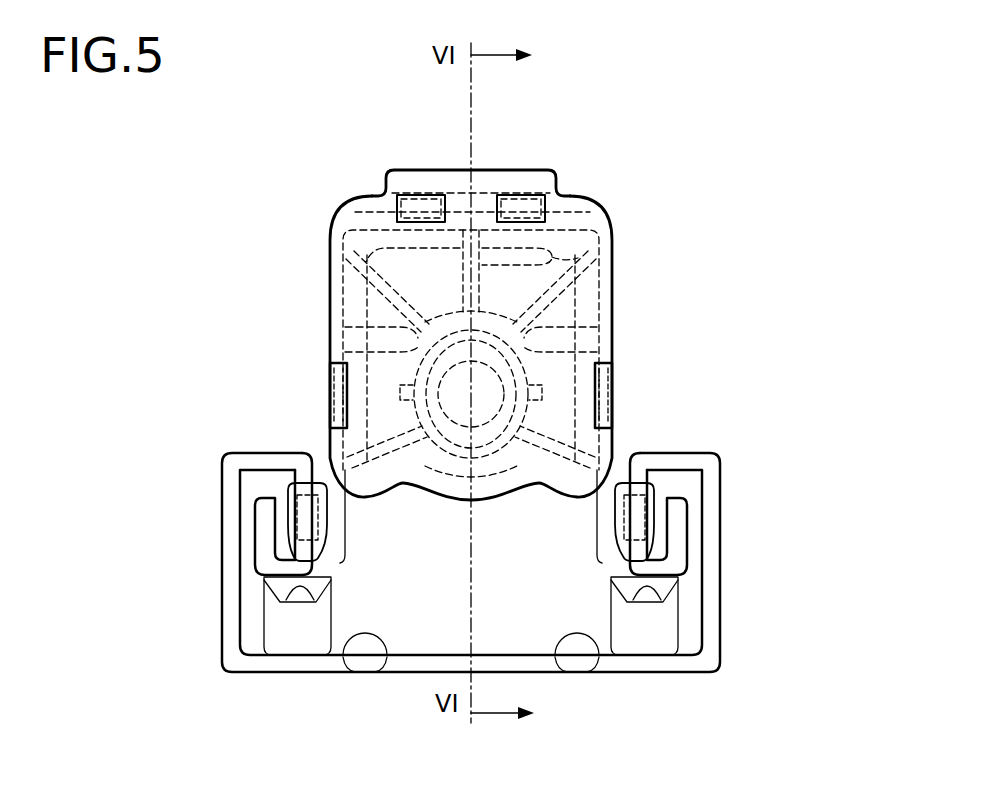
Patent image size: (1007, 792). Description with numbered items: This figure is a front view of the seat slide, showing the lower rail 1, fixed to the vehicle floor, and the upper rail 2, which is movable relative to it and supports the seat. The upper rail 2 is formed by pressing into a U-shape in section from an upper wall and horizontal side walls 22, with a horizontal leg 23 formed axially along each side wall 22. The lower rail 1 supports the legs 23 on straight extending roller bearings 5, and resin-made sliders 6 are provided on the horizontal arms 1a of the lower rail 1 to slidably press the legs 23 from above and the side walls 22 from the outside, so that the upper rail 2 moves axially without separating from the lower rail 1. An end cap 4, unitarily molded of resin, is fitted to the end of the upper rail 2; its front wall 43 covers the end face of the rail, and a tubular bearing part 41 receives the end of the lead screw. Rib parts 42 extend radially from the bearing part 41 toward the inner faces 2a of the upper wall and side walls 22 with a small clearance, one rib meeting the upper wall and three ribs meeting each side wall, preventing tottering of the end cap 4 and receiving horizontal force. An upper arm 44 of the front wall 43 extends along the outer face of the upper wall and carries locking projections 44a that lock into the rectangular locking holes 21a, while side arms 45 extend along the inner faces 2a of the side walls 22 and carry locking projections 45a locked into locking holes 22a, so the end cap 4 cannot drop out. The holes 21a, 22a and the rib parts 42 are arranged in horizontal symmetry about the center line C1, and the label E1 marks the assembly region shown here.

The lower rail 1 is at (663, 683).
The horizontal arm 1a is at (236, 470).
The upper rail 2 is at (626, 302).
The inner face 2a is at (347, 203).
The end cap 4 is at (626, 242).
The roller bearing 5 is at (290, 626).
The slider 6 is at (288, 520).
The locking hole 21a is at (422, 192).
The horizontal side wall 22 is at (328, 312).
The locking hole 22a is at (328, 413).
The horizontal leg 23 is at (276, 595).
The tubular bearing part 41 is at (445, 470).
The rib part 42 is at (615, 287).
The front wall 43 is at (576, 212).
The upper arm 44 is at (478, 170).
The locking projection 44a is at (330, 225).
The side arm 45 is at (328, 352).
The locking projection 45a is at (330, 387).
The center line C1 is at (471, 108).
The electronic unit E1 is at (691, 168).